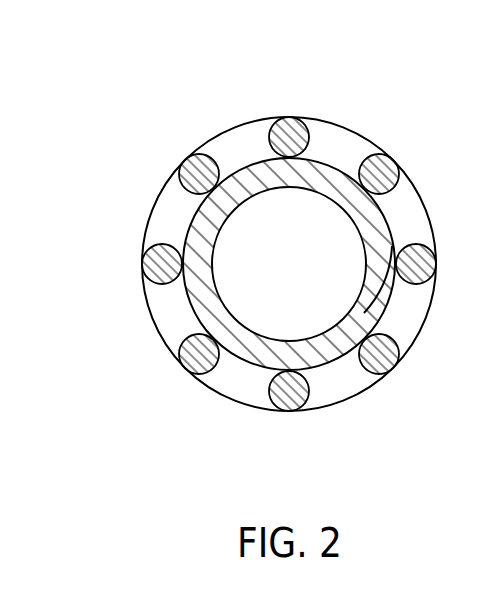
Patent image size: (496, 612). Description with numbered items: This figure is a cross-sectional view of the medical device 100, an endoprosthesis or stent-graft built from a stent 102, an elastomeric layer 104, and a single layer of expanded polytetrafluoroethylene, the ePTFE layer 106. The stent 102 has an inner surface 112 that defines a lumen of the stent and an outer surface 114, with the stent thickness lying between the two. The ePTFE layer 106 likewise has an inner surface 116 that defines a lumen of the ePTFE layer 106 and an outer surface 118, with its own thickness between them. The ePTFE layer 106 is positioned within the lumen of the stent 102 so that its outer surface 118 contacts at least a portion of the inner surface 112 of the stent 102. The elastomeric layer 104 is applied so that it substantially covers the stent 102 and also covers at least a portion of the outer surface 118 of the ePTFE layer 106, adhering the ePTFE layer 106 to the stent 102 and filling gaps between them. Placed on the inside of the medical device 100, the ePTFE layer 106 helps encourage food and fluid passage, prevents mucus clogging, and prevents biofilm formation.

The medical device 100 is at (256, 258).
The stent 102 is at (289, 117).
The elastomeric layer 104 is at (340, 146).
The single layer of expanded polytetrafluoroethylene (ePTFE) 106 is at (248, 264).
The inner surface 112 is at (285, 369).
The outer surface 114 is at (290, 411).
The inner surface 116 is at (262, 192).
The outer surface 118 is at (383, 222).